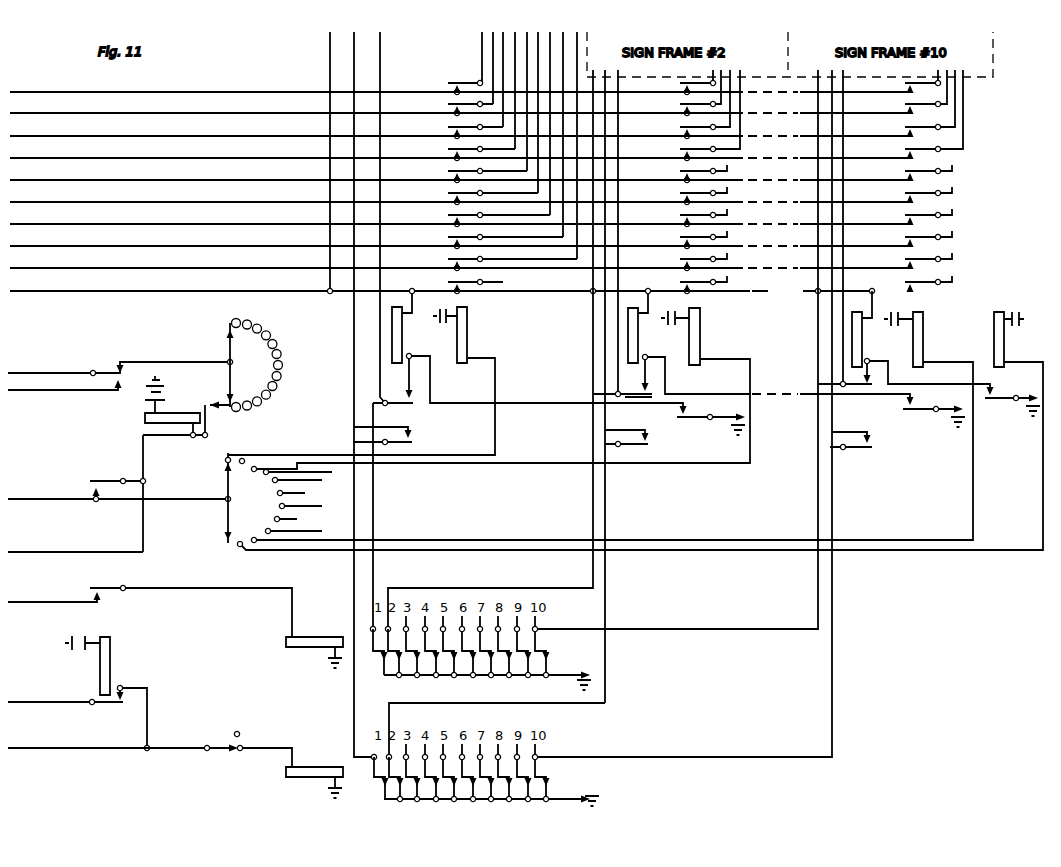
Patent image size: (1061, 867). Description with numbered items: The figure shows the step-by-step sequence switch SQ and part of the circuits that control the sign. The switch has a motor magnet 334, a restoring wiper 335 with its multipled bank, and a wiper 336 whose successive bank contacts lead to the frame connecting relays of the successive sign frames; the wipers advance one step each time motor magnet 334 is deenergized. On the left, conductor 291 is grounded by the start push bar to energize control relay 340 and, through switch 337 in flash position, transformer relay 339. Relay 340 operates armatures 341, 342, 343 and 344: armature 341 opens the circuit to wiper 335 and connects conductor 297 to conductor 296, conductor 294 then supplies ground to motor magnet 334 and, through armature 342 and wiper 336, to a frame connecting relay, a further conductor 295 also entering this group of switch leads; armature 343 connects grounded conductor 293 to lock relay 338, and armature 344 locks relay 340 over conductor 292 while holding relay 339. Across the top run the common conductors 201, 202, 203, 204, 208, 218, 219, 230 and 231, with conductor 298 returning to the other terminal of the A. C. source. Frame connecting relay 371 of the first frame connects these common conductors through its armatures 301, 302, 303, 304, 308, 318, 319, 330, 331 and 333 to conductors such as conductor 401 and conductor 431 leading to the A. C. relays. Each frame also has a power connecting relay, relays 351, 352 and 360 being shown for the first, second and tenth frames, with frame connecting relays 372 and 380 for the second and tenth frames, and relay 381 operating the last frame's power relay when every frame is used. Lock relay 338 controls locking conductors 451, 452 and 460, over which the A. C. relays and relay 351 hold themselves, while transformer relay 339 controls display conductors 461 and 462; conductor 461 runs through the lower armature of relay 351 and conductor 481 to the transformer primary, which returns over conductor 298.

The common conductor 201 is at (462, 84).
The common conductor 202 is at (462, 105).
The common conductor 203 is at (462, 128).
The common conductor 204 is at (462, 150).
The common conductor 208 is at (462, 172).
The common conductor 218 is at (462, 194).
The common conductor 219 is at (462, 216).
The common conductor 230 is at (462, 238).
The common conductor 231 is at (462, 260).
The conductor 298 is at (592, 285).
The conductor 291 is at (107, 740).
The conductor 292 is at (65, 695).
The conductor 293 is at (54, 594).
The conductor 294 is at (75, 544).
The conductor 295 is at (119, 492).
The conductor 296 is at (65, 382).
The conductor 297 is at (120, 366).
The armature 301 is at (451, 85).
The armature 302 is at (456, 106).
The armature 303 is at (461, 129).
The armature 304 is at (467, 151).
The armature 308 is at (473, 173).
The armature 318 is at (479, 195).
The armature 319 is at (485, 217).
The spring 330 is at (491, 239).
The armature 331 is at (498, 261).
The armature 333 is at (461, 284).
The motor magnet 334 is at (175, 464).
The restoring wiper 335 is at (230, 350).
The wiper 336 is at (346, 498).
The switch 337 is at (222, 748).
The lock relay 338 is at (328, 636).
The transformer relay 339 is at (326, 766).
The control relay 340 is at (100, 667).
The armature 341 is at (106, 363).
The armature 342 is at (118, 474).
The armature 343 is at (191, 604).
The armature 344 is at (107, 718).
The power connecting relay 351 is at (402, 340).
The power connecting relay 352 is at (638, 340).
The power connecting relay 360 is at (862, 343).
The frame connecting relay 371 is at (464, 340).
The frame connecting relay 372 is at (706, 337).
The frame connecting relay 380 is at (929, 337).
The relay 381 is at (1010, 343).
The conductor 401 is at (482, 44).
The conductor 431 is at (578, 106).
The conductor 451 is at (383, 40).
The conductor 452 is at (619, 265).
The conductor 460 is at (843, 286).
The conductor 461 is at (353, 582).
The conductor 462 is at (428, 690).
The conductor 481 is at (354, 72).